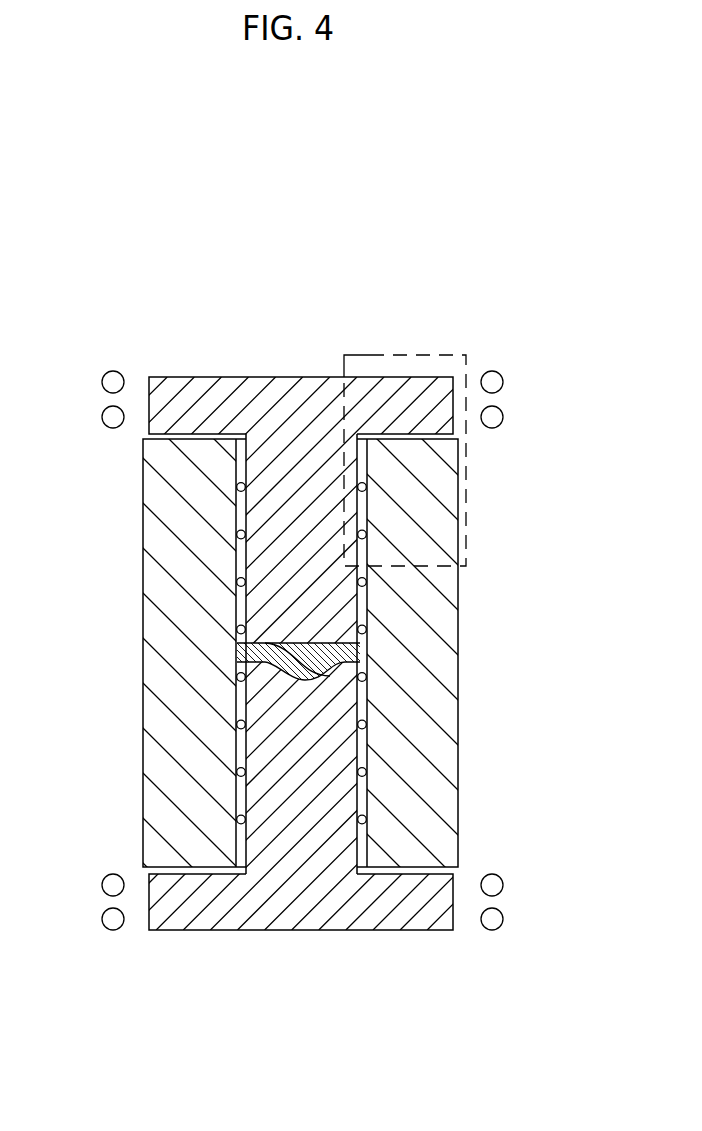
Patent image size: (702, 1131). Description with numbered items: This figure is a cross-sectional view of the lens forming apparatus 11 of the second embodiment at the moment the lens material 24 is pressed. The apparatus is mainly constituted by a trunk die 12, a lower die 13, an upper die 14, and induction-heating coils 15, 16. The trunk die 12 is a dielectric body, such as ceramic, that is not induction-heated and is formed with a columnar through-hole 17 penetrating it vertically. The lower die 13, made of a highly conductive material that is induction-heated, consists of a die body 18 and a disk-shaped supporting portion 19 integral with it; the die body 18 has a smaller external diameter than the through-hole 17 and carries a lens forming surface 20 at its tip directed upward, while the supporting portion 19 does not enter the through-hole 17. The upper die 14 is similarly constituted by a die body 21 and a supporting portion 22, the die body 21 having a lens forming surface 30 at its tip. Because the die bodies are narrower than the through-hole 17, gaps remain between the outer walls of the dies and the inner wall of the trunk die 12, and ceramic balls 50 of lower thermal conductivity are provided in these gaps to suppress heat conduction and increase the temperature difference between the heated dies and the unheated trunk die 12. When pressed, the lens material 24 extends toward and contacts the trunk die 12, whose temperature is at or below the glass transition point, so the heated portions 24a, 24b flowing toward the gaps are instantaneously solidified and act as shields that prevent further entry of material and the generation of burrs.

The lens forming apparatus 11 is at (372, 277).
The trunk die 12 is at (477, 572).
The lower die 13 is at (470, 937).
The upper die 14 is at (158, 367).
The induction-heating coil 15 is at (107, 875).
The induction-heating coil 16 is at (106, 371).
The through-hole 17 is at (240, 455).
The die body 18 is at (345, 752).
The supporting portion 19 is at (310, 912).
The lens forming surface 20 is at (367, 717).
The die body 21 is at (253, 522).
The supporting portion 22 is at (238, 400).
The lens material 24 is at (243, 673).
The portion of the lens material 24a is at (235, 655).
The portion of the lens material 24b is at (367, 653).
The lens forming surface 30 is at (300, 655).
The ceramic balls 50 is at (240, 487).